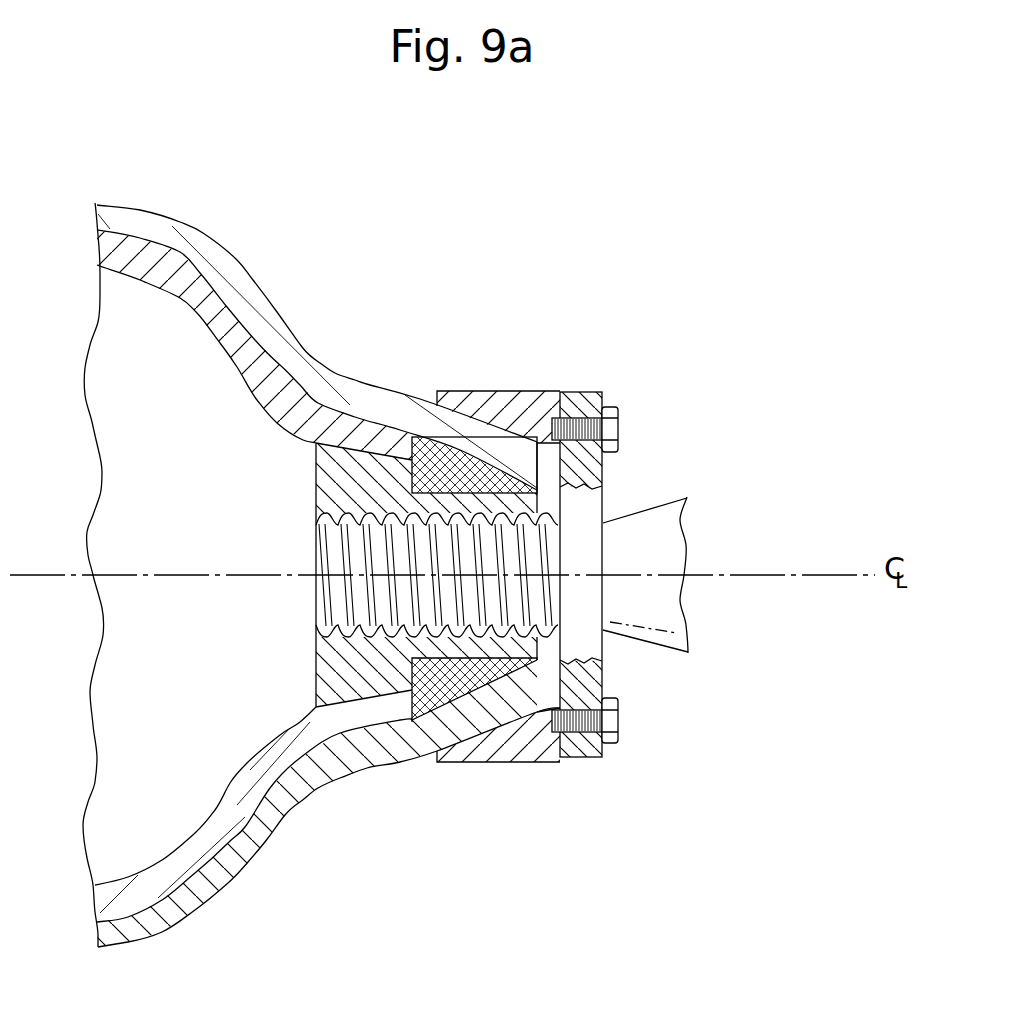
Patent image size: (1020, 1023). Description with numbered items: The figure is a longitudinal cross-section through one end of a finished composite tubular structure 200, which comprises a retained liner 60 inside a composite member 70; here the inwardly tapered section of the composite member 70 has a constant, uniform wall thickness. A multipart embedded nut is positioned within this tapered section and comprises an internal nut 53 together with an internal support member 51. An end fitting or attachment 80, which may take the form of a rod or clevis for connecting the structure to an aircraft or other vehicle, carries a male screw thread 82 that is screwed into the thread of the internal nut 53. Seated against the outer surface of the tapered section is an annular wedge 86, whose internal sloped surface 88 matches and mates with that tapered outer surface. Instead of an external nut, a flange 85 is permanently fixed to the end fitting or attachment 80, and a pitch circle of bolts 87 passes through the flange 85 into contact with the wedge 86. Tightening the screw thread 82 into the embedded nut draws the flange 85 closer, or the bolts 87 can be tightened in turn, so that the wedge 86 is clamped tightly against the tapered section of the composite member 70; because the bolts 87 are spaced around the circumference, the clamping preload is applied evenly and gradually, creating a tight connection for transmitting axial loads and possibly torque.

The composite tubular structure 200 is at (124, 188).
The liner 60 is at (203, 306).
The composite member 70 is at (352, 763).
The internal nut 53 is at (383, 477).
The internal support member 51 is at (424, 455).
The screw thread 82 is at (385, 552).
The annular wedge 86 is at (511, 397).
The internal sloped surface 88 is at (483, 740).
The flange 85 is at (600, 402).
The bolts 87 is at (612, 428).
The end fitting or attachment 80 is at (663, 542).